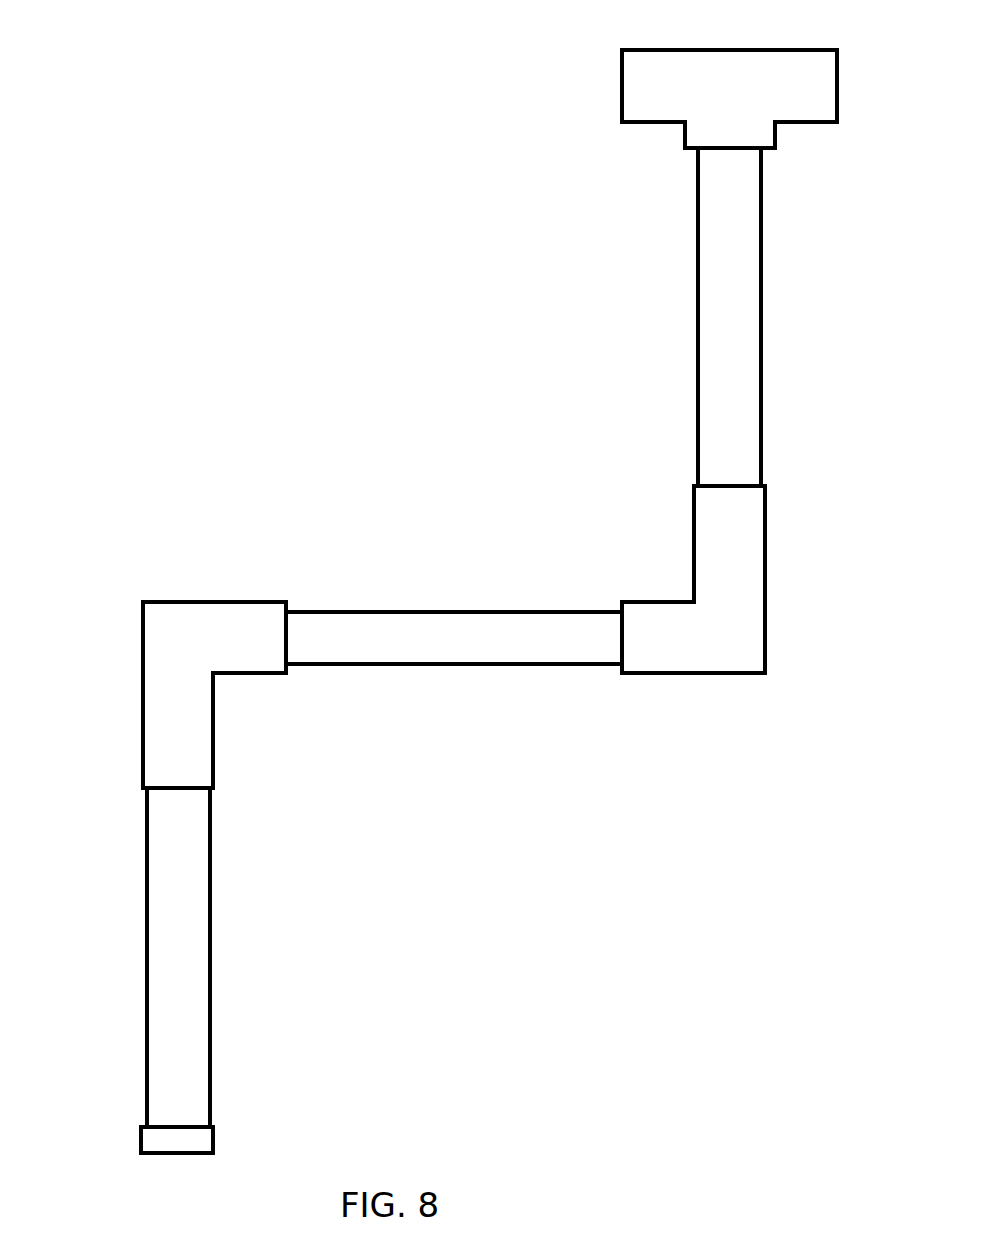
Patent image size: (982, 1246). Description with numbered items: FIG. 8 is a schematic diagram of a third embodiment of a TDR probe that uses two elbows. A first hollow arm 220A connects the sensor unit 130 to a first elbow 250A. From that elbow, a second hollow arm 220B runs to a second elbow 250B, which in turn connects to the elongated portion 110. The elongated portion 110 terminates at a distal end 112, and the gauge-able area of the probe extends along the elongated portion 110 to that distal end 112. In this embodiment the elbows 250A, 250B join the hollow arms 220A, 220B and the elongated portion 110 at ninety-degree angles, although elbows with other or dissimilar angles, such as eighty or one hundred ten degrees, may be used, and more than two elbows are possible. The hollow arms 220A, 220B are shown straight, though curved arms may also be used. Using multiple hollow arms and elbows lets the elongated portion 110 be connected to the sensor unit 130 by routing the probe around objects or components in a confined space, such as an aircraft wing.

The sensor unit 130 is at (672, 87).
The first hollow arm 220A is at (723, 352).
The first elbow 250A is at (745, 586).
The second hollow arm 220B is at (451, 632).
The second elbow 250B is at (167, 678).
The elongated portion 110 is at (202, 1050).
The distal end 112 is at (195, 1141).